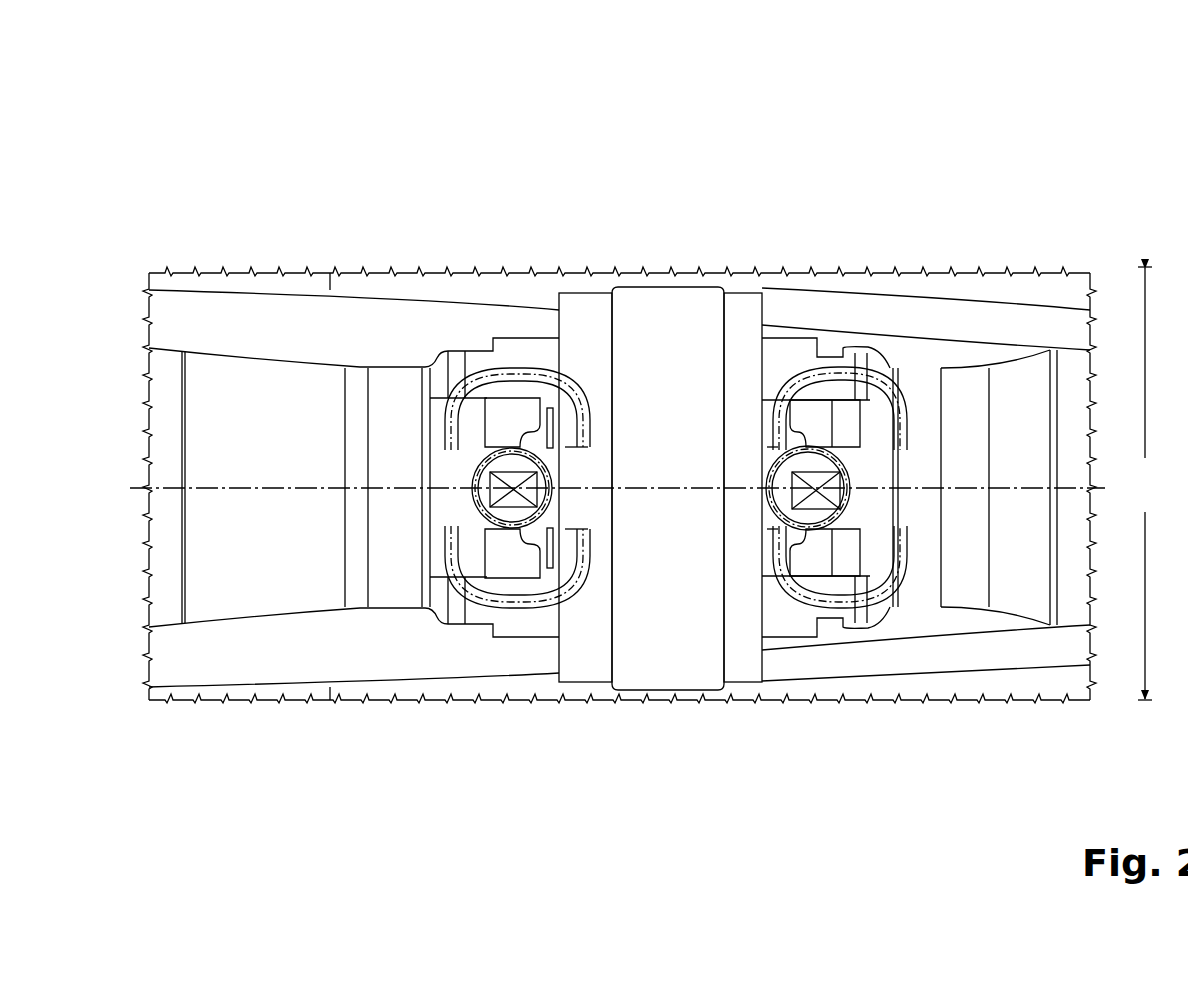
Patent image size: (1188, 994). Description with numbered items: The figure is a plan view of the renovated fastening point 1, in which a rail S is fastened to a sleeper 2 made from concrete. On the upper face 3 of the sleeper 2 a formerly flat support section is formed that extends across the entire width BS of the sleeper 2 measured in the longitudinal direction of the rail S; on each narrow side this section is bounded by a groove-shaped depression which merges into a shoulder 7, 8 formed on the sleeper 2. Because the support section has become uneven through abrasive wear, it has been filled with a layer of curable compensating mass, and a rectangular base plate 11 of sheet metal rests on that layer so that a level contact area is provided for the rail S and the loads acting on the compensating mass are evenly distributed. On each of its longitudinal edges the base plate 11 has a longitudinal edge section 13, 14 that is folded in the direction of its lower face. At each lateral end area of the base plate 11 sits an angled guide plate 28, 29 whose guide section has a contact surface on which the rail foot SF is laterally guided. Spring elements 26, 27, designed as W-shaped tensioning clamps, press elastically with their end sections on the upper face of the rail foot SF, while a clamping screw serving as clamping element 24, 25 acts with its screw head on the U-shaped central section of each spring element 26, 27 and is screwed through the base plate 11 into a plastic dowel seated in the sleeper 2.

The fastening point 1 is at (338, 196).
The sleeper 2 is at (1015, 680).
The upper face 3 is at (358, 437).
The shoulder 7 is at (958, 400).
The shoulder 8 is at (328, 568).
The base plate 11 is at (530, 622).
The longitudinal edge section 13 is at (797, 640).
The longitudinal edge section 14 is at (530, 345).
The clamping element 24 is at (509, 488).
The clamping element 25 is at (813, 473).
The spring element 26 is at (522, 378).
The spring element 27 is at (897, 403).
The guide plate 28 is at (443, 507).
The guide plate 29 is at (817, 545).
The rail S is at (673, 305).
The rail foot SF is at (742, 352).
The width of the sleeper BS is at (1153, 483).